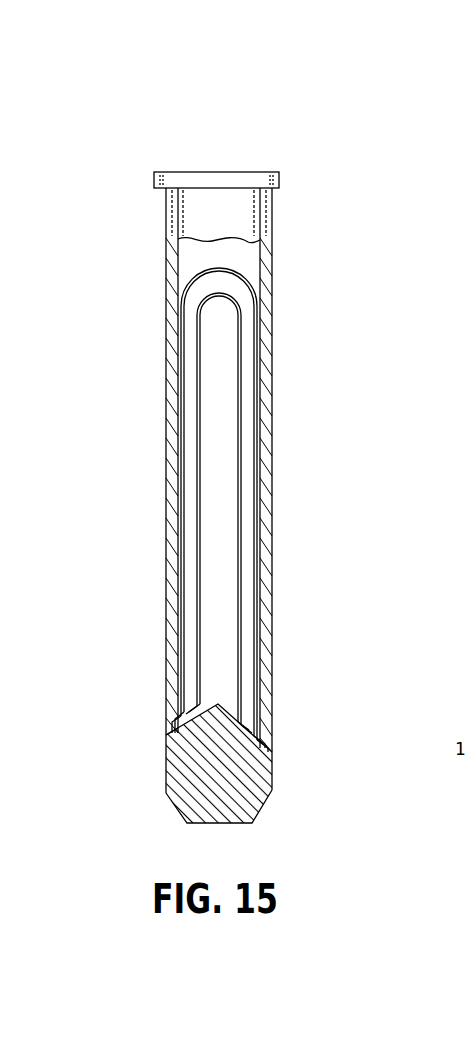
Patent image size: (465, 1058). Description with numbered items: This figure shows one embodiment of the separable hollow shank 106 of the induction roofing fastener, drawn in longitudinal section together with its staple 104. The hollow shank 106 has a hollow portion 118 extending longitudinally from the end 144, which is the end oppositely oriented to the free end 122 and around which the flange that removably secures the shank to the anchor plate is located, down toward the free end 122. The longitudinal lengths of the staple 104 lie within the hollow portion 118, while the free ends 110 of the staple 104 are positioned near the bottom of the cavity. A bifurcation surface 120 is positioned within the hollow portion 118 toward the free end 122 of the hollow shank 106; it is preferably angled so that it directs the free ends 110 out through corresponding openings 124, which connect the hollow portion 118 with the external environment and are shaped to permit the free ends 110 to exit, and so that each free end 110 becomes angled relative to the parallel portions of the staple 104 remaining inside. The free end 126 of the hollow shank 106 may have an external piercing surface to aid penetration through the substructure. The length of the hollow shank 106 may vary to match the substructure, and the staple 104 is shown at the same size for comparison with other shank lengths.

The staple 104 is at (247, 531).
The hollow shank 106 is at (320, 335).
The free ends of the staple 110 is at (177, 700).
The hollow portion 118 is at (237, 270).
The bifurcation surface 120 is at (233, 717).
The free end of the hollow shank 122 is at (272, 753).
The openings 124 is at (167, 735).
The free end of the hollow shank 126 is at (235, 790).
The end of the hollow shank 144 is at (280, 178).